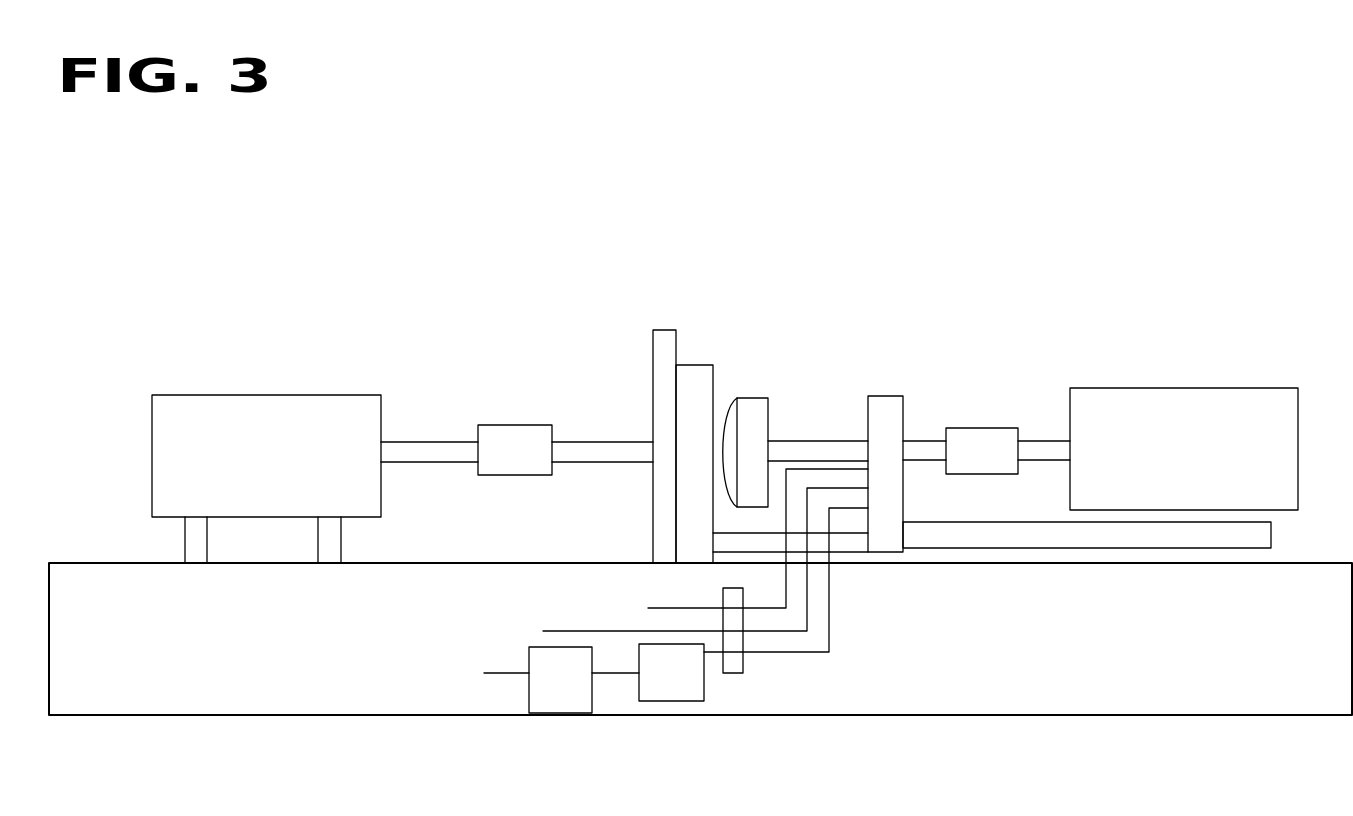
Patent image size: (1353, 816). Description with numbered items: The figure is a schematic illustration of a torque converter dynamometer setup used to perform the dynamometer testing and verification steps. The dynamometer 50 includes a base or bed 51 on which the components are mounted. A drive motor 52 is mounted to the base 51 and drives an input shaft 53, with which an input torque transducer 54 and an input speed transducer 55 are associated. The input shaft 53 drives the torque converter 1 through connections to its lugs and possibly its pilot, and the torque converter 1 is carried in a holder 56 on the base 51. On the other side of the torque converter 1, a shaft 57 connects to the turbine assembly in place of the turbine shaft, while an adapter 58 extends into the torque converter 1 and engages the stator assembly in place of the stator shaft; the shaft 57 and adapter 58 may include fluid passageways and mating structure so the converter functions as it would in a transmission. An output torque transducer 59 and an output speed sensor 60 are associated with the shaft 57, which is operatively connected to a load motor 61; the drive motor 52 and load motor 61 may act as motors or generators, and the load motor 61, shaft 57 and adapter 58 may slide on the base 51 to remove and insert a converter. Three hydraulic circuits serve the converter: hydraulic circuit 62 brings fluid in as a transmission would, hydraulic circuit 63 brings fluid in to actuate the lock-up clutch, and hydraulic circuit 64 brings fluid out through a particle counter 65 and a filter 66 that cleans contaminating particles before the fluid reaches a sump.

The torque converter 1 is at (768, 402).
The dynamometer 50 is at (1018, 243).
The base 51 is at (128, 563).
The drive motor 52 is at (280, 395).
The input shaft 53 is at (460, 442).
The input torque transducer 54 is at (547, 470).
The input speed transducer 55 is at (513, 475).
The lens holder stage 56 is at (653, 372).
The shaft 57 is at (903, 441).
The adapter 58 is at (883, 396).
The output torque transducer 59 is at (1009, 432).
The output speed sensor 60 is at (978, 428).
The load motor 61 is at (1298, 428).
The hydraulic circuit 62 is at (829, 596).
The hydraulic circuit 63 is at (786, 596).
The hydraulic circuit 64 is at (829, 632).
The particle counter 65 is at (704, 688).
The filter 66 is at (529, 688).